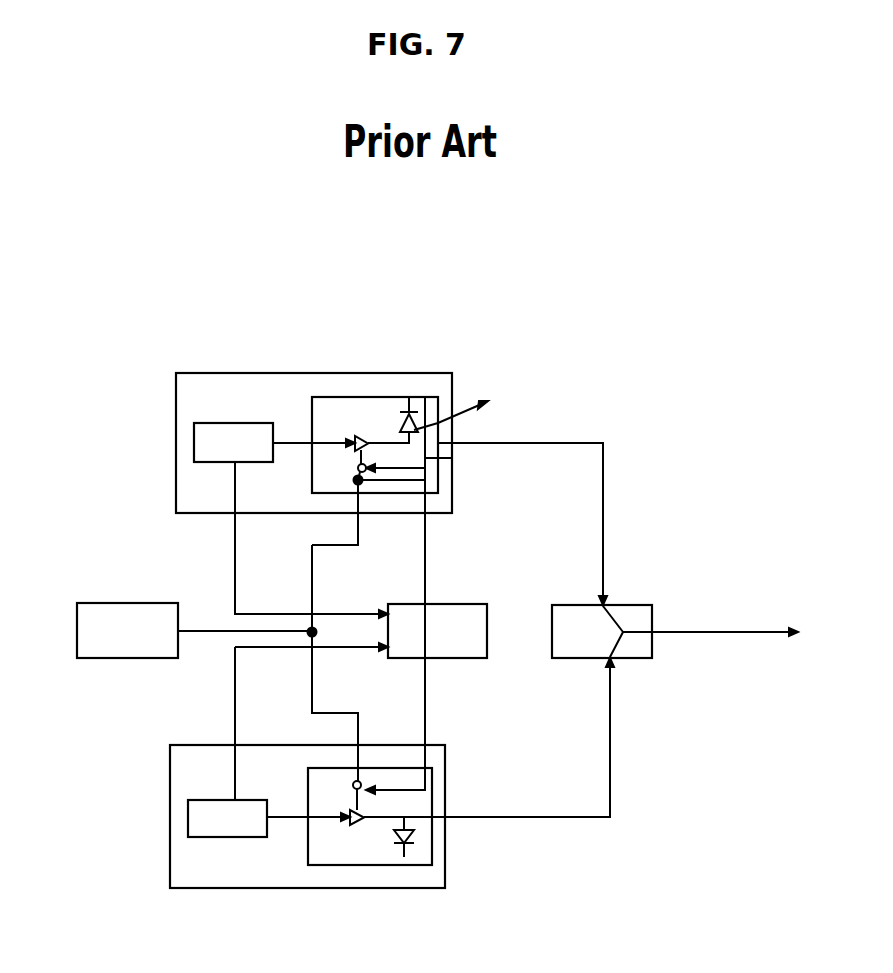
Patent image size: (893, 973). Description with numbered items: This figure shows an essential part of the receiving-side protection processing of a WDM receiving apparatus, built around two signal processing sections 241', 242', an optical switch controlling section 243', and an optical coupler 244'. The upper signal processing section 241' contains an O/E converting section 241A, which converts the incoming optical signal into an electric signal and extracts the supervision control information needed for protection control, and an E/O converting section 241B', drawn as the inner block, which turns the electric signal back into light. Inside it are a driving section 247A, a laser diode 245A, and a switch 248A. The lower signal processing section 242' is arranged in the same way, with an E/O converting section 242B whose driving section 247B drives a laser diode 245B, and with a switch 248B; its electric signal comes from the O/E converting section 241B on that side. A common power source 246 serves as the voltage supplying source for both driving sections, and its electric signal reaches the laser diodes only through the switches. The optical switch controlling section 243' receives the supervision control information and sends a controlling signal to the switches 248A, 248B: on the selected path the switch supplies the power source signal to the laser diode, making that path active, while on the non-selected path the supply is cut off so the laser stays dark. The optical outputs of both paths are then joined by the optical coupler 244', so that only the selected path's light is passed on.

The signal processing section 241' is at (314, 405).
The O/E converting section 241A is at (235, 423).
The first laser module 241B' is at (408, 400).
The driving section 247A is at (358, 444).
The LD (Laser Diode) 245A is at (412, 424).
The switch 248A is at (480, 447).
The power source 246 is at (128, 603).
The optical switch controlling section 243' is at (441, 603).
The optical coupler 244' is at (662, 590).
The signal processing section 242' is at (259, 816).
The E/O converting section 241B is at (195, 870).
The E/O converting section 242B is at (372, 865).
The driving section 247B is at (342, 825).
The LD (Laser Diode) 245B is at (418, 832).
The switch 248B is at (354, 790).